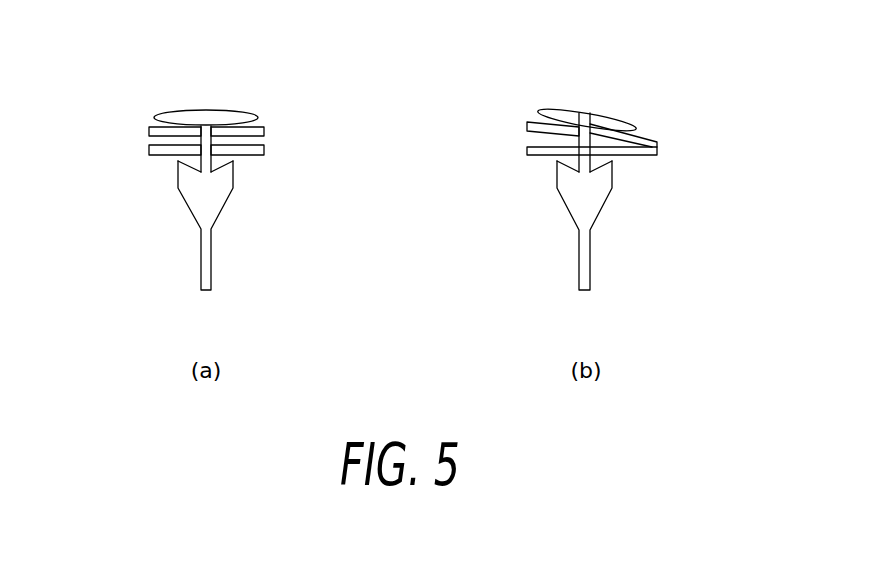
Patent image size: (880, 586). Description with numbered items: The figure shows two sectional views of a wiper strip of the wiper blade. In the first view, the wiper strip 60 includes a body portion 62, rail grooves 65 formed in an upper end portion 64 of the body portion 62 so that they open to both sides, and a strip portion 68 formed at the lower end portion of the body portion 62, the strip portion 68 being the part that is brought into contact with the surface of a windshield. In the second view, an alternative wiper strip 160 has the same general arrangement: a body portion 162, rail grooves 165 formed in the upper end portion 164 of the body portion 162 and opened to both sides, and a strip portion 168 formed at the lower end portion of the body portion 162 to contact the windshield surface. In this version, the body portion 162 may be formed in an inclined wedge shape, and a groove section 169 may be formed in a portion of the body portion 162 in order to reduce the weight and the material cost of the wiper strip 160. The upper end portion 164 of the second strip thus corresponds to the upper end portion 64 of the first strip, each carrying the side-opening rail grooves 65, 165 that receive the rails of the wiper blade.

The wiper strip 60 is at (180, 166).
The body portion 62 is at (207, 136).
The upper end portion 64 is at (185, 116).
The rail grooves 65 is at (245, 122).
The strip portion 68 is at (207, 263).
The wiper strip 160 is at (624, 160).
The body portion 162 is at (585, 135).
The head portion 164 is at (578, 113).
The rail grooves 165 is at (620, 128).
The strip portion 168 is at (585, 268).
The groove section 169 is at (537, 140).